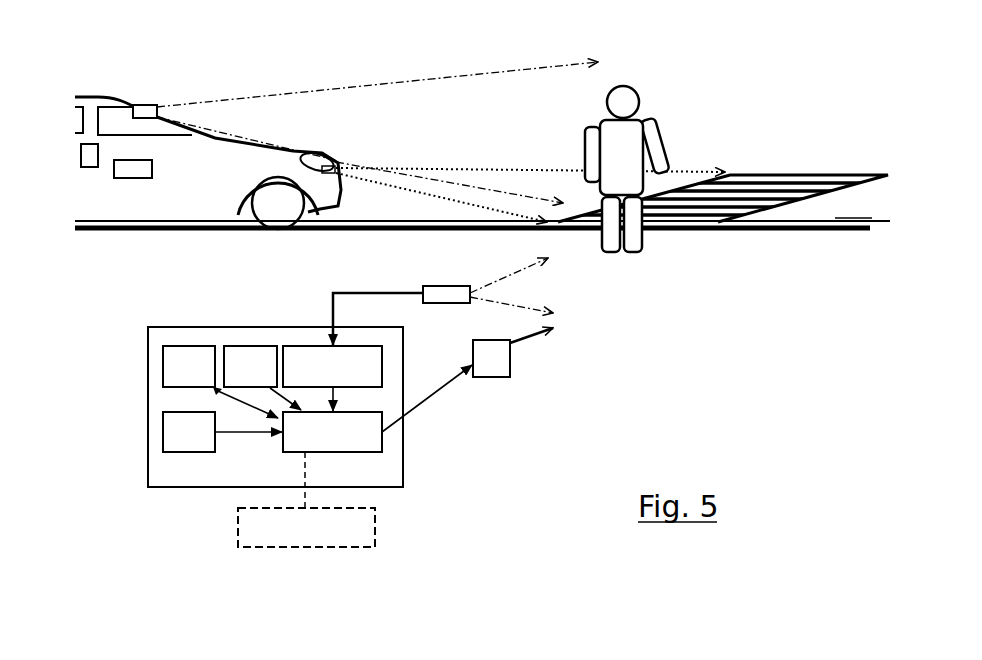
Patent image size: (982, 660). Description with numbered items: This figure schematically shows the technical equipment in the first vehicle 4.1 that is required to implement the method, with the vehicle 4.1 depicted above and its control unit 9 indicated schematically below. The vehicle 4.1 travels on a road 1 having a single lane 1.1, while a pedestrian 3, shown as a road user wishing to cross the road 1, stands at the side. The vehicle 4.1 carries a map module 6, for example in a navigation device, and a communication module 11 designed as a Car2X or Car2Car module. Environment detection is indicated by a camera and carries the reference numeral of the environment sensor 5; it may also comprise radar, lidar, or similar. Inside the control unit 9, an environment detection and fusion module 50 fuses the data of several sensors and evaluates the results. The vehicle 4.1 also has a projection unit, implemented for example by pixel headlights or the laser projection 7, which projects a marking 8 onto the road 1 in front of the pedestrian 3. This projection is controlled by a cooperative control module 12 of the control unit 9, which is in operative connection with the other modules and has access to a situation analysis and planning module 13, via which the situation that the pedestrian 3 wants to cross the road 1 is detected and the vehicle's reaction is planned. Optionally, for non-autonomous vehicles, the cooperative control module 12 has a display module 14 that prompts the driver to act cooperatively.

The road 1 is at (806, 212).
The lane 1.1 is at (852, 206).
The pedestrian 3 is at (627, 158).
The vehicle 4.1 is at (127, 193).
The environment sensor 5 is at (148, 108).
The map module 6 is at (140, 167).
The laser projection 7 is at (333, 158).
The projected crosswalk marking 8 is at (703, 202).
The control unit 9 is at (147, 399).
The communication module 11 is at (89, 152).
The cooperative control module 12 is at (353, 438).
The situation analysis and planning module 13 is at (175, 437).
The display module 14 is at (358, 530).
The environment detection and fusion module 50 is at (355, 360).